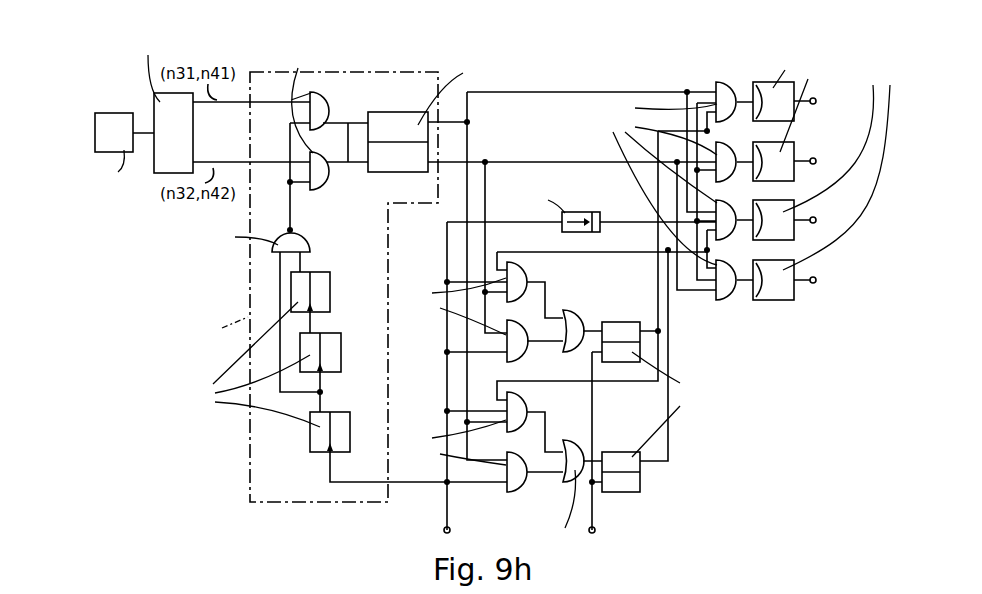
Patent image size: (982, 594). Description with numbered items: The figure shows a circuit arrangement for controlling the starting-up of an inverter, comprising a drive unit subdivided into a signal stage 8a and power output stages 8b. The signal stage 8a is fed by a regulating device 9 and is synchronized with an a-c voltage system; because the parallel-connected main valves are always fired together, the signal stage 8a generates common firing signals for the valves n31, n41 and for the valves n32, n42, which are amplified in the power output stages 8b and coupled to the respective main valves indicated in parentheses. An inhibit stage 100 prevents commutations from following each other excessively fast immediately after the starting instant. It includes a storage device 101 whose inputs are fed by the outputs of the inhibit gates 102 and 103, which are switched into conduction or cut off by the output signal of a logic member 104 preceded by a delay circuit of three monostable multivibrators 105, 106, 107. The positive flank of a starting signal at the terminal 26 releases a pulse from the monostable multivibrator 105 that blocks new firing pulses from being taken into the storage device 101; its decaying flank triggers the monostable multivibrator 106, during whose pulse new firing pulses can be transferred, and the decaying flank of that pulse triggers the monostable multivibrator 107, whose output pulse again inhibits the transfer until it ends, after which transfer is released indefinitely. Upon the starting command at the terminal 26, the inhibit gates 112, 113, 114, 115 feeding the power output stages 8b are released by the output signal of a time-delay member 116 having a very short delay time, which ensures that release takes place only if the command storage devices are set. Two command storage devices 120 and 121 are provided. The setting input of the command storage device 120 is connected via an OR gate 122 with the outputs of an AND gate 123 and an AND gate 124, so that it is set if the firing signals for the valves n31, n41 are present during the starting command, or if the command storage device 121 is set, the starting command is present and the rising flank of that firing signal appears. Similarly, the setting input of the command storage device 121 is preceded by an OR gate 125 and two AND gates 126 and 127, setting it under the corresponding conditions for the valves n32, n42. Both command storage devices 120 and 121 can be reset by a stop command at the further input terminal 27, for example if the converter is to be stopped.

The regulating device 9 is at (80, 157).
The signal stage 8a is at (172, 96).
The power output stages 8b is at (787, 58).
The inhibit stage 100 is at (249, 289).
The storage device 101 is at (378, 111).
The inhibit gate 102 is at (323, 95).
The inhibit gate 103 is at (320, 154).
The logic member 104 is at (307, 245).
The first monostable multivibrator 105 is at (344, 410).
The second monostable multivibrator 106 is at (340, 334).
The third monostable multivibrator 107 is at (331, 275).
The inhibit gate 112 is at (719, 81).
The inhibit gate 113 is at (722, 148).
The inhibit gate 114 is at (724, 204).
The inhibit gate 115 is at (723, 264).
The time-delay member 116 is at (582, 211).
The command storage device 120 is at (616, 451).
The command storage device 121 is at (613, 321).
The OR gate 122 is at (567, 440).
The AND gate 123 is at (528, 488).
The AND gate 124 is at (529, 397).
The OR gate 125 is at (567, 311).
The AND gate 126 is at (518, 305).
The AND gate 127 is at (526, 267).
The terminal 26 is at (451, 531).
The further input terminal 27 is at (596, 531).